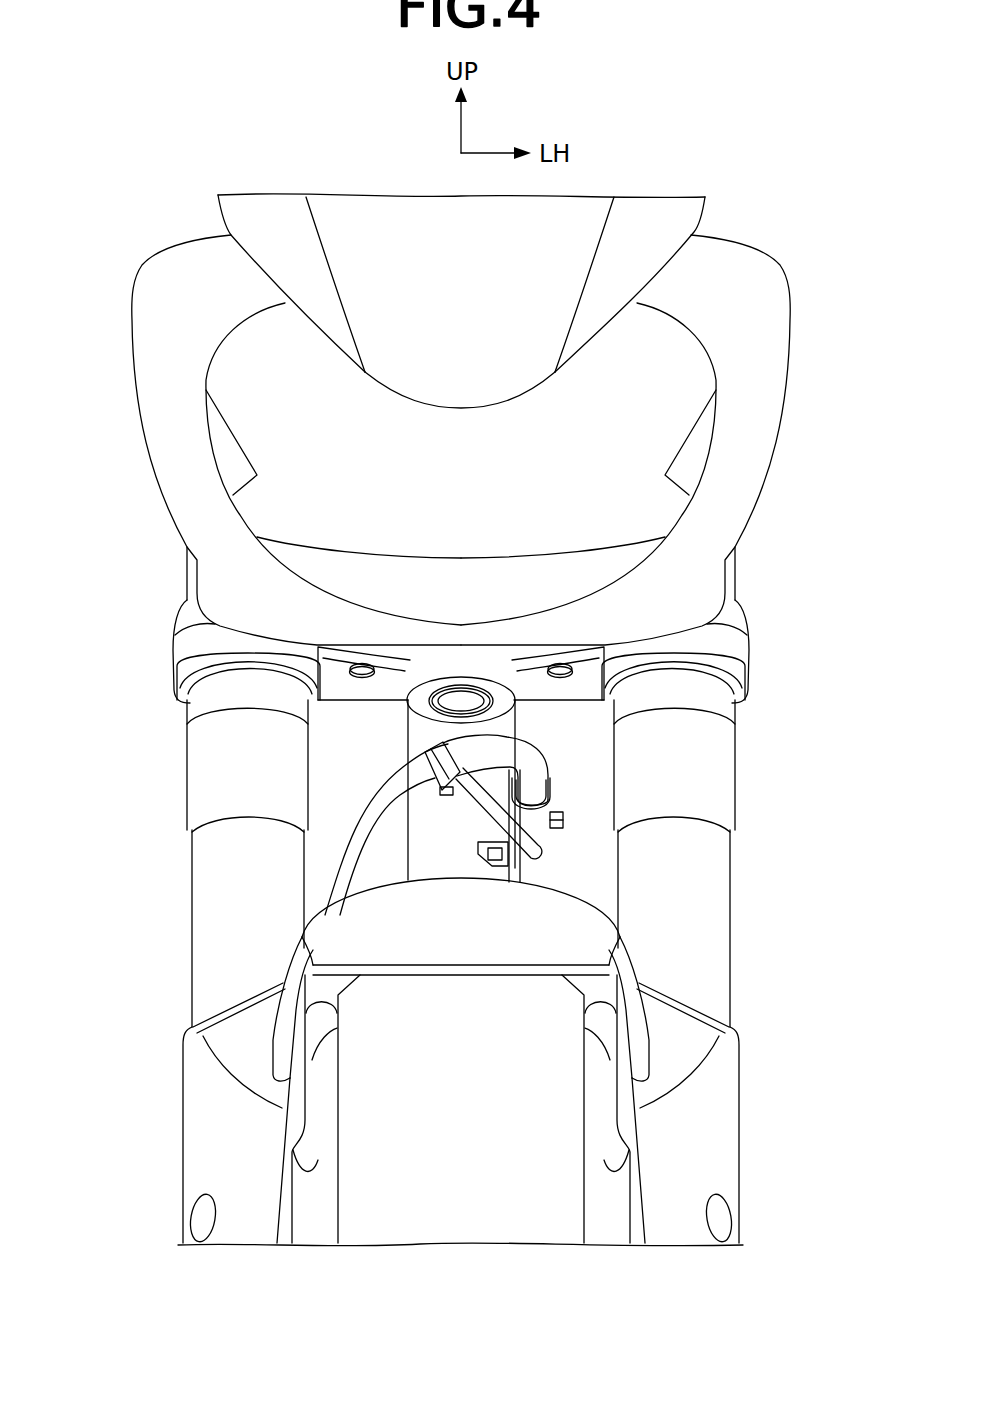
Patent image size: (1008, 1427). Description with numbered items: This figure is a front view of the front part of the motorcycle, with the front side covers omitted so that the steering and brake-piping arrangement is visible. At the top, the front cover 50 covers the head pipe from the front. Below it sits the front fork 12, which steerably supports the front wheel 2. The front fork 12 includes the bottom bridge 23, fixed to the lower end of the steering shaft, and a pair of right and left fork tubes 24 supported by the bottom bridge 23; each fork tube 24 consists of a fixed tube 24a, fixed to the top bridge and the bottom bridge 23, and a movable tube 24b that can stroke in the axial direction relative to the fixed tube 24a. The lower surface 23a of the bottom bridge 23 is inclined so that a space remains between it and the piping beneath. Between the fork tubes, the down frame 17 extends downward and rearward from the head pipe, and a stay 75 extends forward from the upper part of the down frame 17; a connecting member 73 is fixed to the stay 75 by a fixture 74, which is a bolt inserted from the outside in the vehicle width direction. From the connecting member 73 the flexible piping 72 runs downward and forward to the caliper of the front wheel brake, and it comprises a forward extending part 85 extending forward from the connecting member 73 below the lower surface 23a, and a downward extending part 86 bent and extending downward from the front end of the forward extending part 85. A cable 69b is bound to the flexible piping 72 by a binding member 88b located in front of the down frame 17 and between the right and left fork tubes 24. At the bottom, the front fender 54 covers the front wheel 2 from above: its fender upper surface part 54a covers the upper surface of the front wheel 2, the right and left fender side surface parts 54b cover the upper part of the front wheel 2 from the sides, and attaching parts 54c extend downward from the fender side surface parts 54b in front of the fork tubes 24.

The front wheel 2 is at (525, 1222).
The front fork 12 is at (467, 661).
The down frame 17 is at (445, 827).
The bottom bridge 23 is at (190, 657).
The lower surface of the bottom bridge 23a is at (561, 694).
The fork tube 24 is at (462, 1004).
The fixed tube 24a is at (223, 764).
The movable tube 24b is at (283, 1228).
The front cover 50 is at (380, 296).
The front fender 54 is at (462, 1093).
The fender upper surface part 54a is at (482, 933).
The fender side surface part 54b is at (296, 953).
The attaching part 54c is at (227, 1222).
The cable 69b is at (244, 845).
The flexible piping 72 is at (478, 853).
The connecting member 73 is at (551, 789).
The fixture 74 is at (565, 820).
The stay 75 is at (436, 801).
The forward extending part 85 is at (531, 770).
The downward extending part 86 is at (349, 857).
The binding member 88b is at (424, 750).